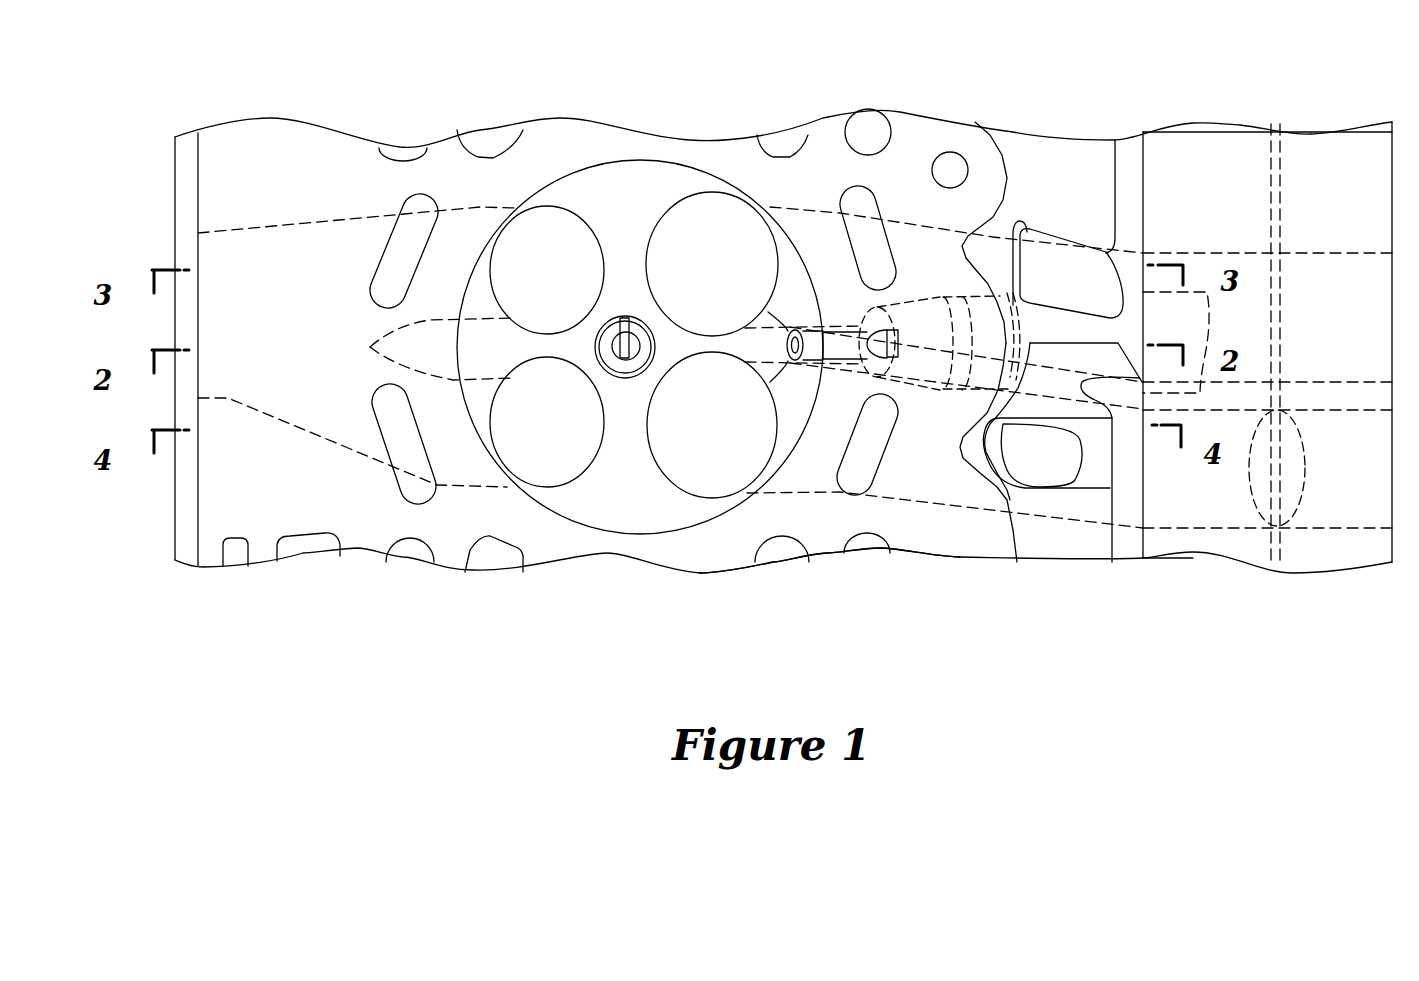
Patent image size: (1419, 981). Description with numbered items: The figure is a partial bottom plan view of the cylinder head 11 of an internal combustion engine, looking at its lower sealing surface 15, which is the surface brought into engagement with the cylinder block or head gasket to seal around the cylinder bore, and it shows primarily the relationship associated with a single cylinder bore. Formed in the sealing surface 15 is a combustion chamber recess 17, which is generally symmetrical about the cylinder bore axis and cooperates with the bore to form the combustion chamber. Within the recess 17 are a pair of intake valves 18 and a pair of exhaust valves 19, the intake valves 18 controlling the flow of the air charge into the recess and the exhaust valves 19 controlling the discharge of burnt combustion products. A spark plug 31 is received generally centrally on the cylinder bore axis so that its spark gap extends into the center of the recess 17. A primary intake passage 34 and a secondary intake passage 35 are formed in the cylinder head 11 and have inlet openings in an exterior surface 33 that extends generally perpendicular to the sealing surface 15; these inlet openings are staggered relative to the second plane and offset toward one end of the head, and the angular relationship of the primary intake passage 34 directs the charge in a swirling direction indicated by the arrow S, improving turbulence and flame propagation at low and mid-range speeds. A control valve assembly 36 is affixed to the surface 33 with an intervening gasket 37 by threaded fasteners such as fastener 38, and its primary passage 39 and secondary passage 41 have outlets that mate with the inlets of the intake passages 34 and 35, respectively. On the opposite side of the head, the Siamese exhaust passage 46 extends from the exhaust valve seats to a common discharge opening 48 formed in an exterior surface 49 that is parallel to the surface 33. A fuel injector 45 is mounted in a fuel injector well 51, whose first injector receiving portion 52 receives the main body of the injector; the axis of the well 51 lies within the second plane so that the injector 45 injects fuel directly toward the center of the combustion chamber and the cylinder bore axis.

The cylinder head 11 is at (337, 131).
The lower sealing surface 15 is at (823, 552).
The combustion chamber recess 17 is at (625, 515).
The intake valves 18 is at (703, 207).
The exhaust valves 19 is at (563, 224).
The spark plug 31 is at (627, 363).
The exterior surface 33 is at (1147, 150).
The primary intake passage 34 is at (935, 230).
The secondary intake passage 35 is at (1048, 518).
The control valve assembly 36 is at (1201, 146).
The gasket 37 is at (1308, 255).
The threaded fastener 38 is at (1345, 517).
The primary passage 39 is at (1283, 197).
The secondary passage 41 is at (1248, 495).
The fuel injector 45 is at (951, 404).
The exhaust passage 46 is at (353, 455).
The common discharge opening 48 is at (195, 246).
The exterior surface 49 is at (172, 200).
The fuel injector well 51 is at (770, 318).
The first injector receiving portion 52 is at (783, 357).
The swirl direction arrow S is at (583, 243).